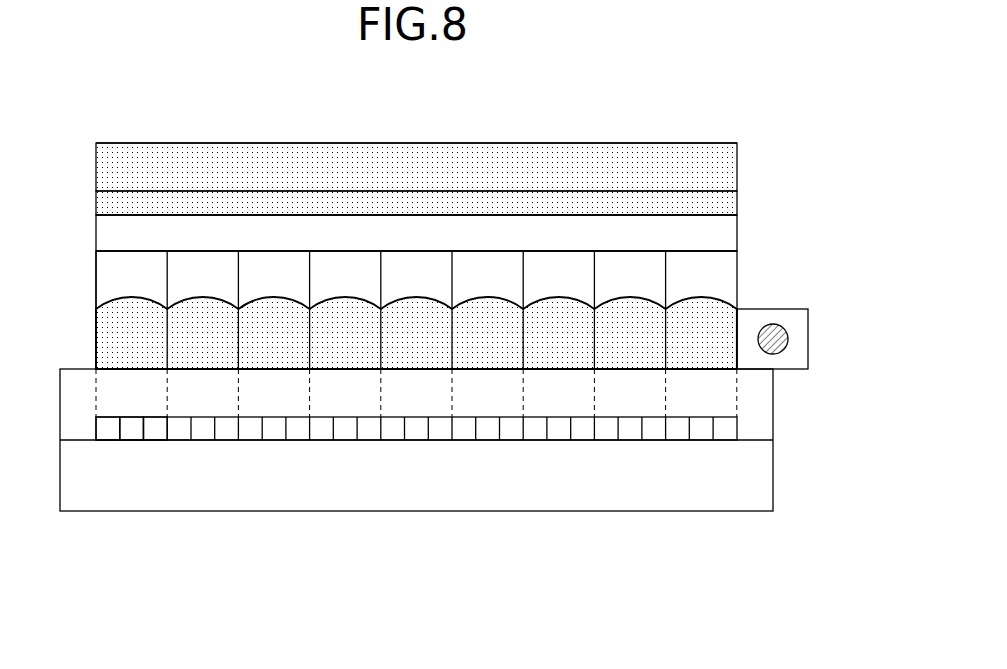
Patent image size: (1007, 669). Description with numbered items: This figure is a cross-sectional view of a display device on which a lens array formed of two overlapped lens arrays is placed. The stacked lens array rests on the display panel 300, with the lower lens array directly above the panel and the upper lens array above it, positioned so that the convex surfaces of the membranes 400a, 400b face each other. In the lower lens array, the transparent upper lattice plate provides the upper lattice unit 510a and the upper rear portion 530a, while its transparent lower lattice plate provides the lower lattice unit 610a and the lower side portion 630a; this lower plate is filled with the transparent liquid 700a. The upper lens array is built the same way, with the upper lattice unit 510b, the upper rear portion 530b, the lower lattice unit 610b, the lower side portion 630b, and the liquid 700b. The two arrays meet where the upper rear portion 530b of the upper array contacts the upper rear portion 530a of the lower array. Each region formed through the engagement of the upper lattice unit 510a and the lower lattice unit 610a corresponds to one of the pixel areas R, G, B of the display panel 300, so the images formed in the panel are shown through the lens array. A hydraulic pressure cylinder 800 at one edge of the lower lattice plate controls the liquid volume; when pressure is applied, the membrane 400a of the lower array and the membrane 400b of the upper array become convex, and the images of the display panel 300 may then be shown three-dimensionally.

The display panel 300 is at (773, 482).
The hydraulic pressure cylinder 800 is at (776, 352).
The membrane of the lower lens array 400a is at (704, 296).
The membrane of the upper lens array 400b is at (507, 213).
The upper lattice unit of the lower lens array 510a is at (96, 264).
The upper lattice unit of the upper lens array 510b is at (737, 222).
The upper rear portion of the lower lens array 530a is at (128, 248).
The upper rear portion of the upper lens array 530b is at (712, 250).
The lower lattice unit of the lower lens array 610a is at (165, 322).
The lower lattice unit of the upper lens array 610b is at (737, 163).
The lower side portion of the lower lens array 630a is at (125, 366).
The lower side portion of the upper lens array 630b is at (589, 143).
The liquid of the lower lens array 700a is at (349, 341).
The liquid of the upper lens array 700b is at (658, 167).
The red pixel area R is at (108, 430).
The green pixel area G is at (131, 430).
The blue pixel area B is at (155, 430).